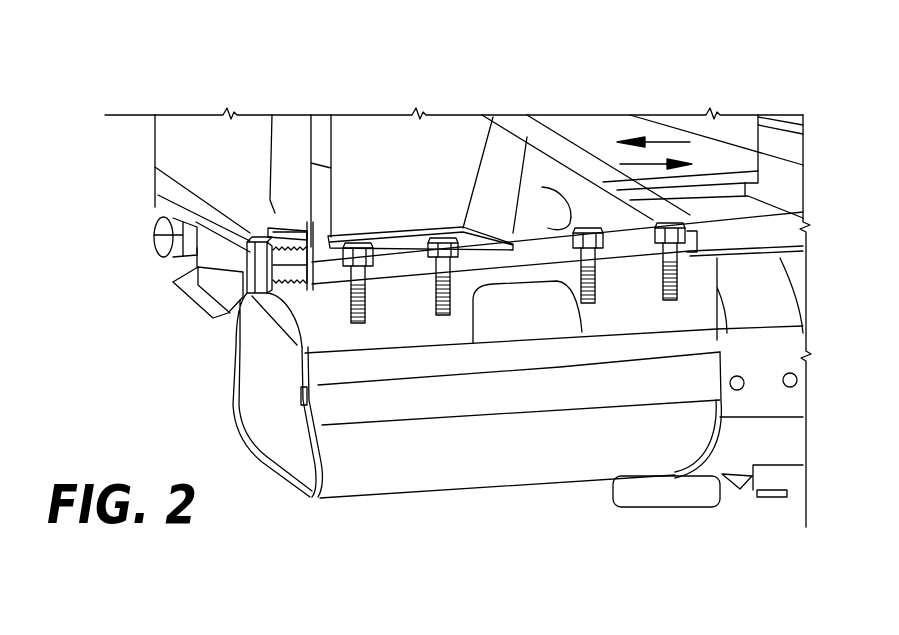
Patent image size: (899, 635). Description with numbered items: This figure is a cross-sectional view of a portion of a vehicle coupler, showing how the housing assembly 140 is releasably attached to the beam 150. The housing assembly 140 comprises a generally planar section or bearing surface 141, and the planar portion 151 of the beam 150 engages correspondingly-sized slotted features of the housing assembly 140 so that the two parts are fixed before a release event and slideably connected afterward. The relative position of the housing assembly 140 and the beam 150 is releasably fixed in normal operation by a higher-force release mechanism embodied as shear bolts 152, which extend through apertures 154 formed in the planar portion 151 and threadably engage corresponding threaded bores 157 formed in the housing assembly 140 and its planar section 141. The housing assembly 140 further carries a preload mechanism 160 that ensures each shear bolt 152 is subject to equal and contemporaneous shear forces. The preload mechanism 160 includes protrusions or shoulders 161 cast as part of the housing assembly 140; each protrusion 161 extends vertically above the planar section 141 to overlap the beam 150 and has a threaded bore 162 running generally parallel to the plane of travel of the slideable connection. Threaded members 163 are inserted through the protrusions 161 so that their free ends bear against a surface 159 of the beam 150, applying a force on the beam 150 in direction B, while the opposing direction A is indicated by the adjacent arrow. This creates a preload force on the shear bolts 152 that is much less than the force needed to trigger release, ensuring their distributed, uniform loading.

The housing assembly 140 is at (356, 490).
The planar section 141 is at (720, 218).
The beam 150 is at (210, 128).
The planar portion 151 is at (385, 247).
The shear bolts 152 is at (440, 243).
The apertures 154 is at (610, 245).
The threaded bores 157 is at (538, 243).
The surface 159 is at (299, 226).
The preload mechanism 160 is at (210, 337).
The protrusions 161 is at (268, 232).
The threaded bore 162 is at (275, 322).
The threaded members 163 is at (165, 232).
The direction A is at (643, 167).
The direction B is at (653, 163).